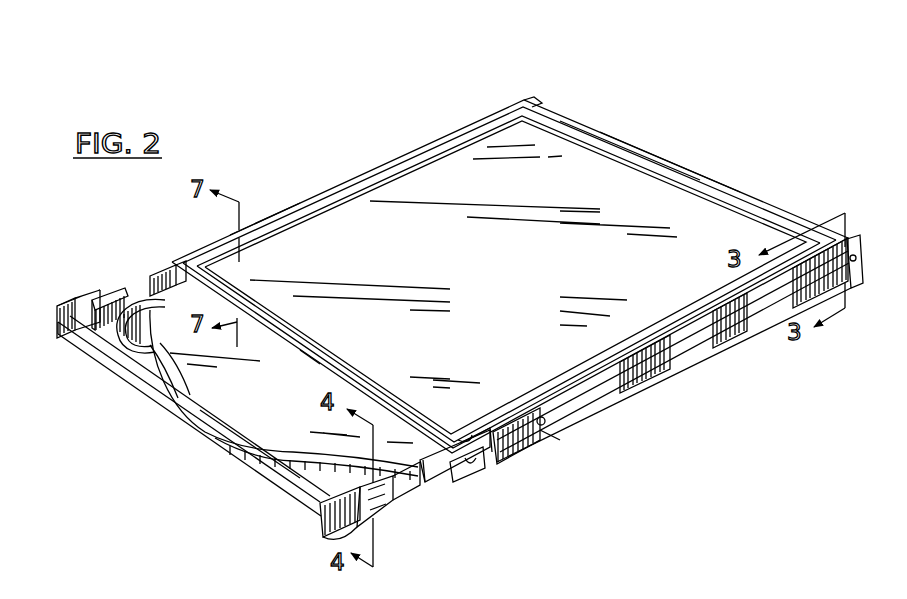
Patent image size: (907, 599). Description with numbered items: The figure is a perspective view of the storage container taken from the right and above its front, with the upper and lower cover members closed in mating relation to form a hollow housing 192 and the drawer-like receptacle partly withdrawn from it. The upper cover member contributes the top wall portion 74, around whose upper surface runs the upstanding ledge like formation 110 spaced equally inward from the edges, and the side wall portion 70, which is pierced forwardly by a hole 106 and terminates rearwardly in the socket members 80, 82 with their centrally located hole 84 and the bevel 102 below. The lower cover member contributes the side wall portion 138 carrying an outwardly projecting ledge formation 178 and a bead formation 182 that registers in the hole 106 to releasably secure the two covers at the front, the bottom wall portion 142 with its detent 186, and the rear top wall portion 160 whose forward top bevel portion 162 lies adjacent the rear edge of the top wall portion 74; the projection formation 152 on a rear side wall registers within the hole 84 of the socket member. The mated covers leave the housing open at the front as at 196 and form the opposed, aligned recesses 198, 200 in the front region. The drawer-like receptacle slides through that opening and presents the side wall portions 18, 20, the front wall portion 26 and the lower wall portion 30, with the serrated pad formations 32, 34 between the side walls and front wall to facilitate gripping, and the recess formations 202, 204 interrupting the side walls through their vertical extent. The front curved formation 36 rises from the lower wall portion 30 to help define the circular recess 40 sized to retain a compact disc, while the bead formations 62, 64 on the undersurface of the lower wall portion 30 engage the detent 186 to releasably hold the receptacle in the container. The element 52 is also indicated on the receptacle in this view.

The side wall portion 20 is at (168, 268).
The ledge like formation 110 is at (385, 176).
The top wall portion 74 is at (488, 282).
The hollow housing 192 is at (295, 205).
The socket member 82 is at (518, 103).
The top bevel portion 162 is at (636, 158).
The top wall portion 160 is at (679, 168).
The recess 200 is at (174, 262).
The hole 84 is at (859, 238).
The projection formation 152 is at (859, 256).
The socket member 80 is at (862, 272).
The bevel 102 is at (852, 283).
The side wall portion 70 is at (733, 337).
The ledge formation 178 is at (668, 372).
The bead formation 182 is at (553, 438).
The side wall portion 138 is at (503, 454).
The hole 106 is at (540, 416).
The bottom wall portion 142 is at (490, 463).
The detent 186 is at (477, 475).
The side wall portion 18 is at (440, 472).
The recess 198 is at (470, 445).
The front wall portion 26 is at (173, 413).
The lower wall portion 30 is at (300, 477).
The front curved formation 36 is at (275, 462).
The serrated pad formation 32 is at (316, 522).
The bead formation 62 is at (345, 538).
The recess formation 202 is at (412, 485).
The serrated pad formation 34 is at (75, 302).
The bead formation 64 is at (97, 340).
The circular recess 40 is at (284, 395).
The recess formation 204 is at (137, 297).
The hub 52 is at (163, 355).
The front opening 196 is at (310, 364).